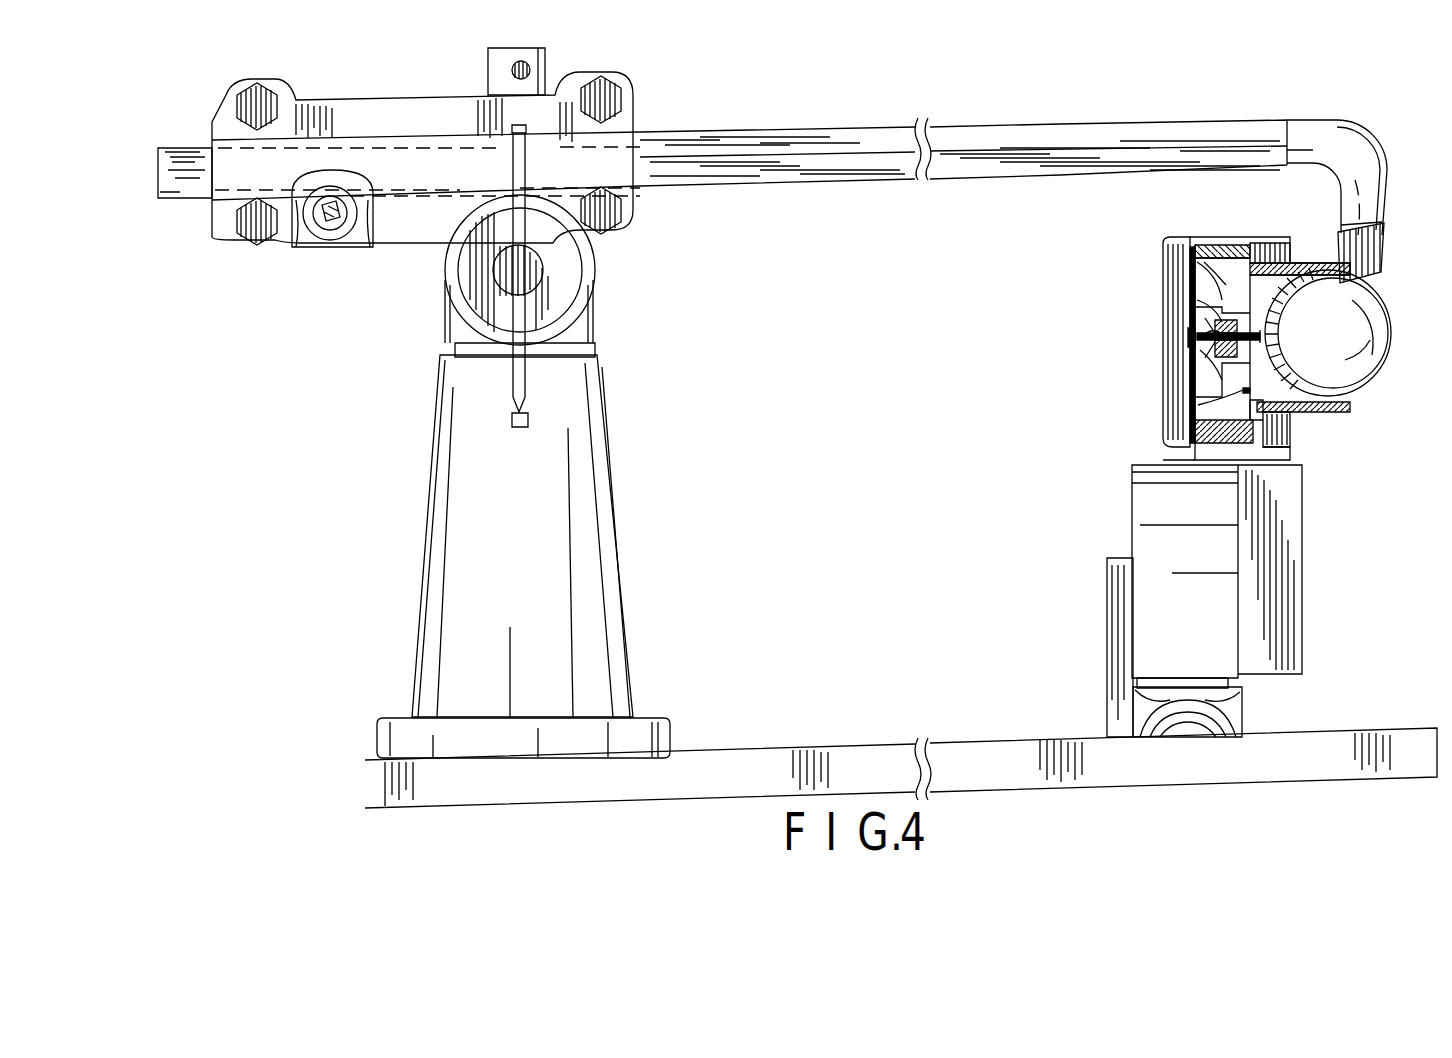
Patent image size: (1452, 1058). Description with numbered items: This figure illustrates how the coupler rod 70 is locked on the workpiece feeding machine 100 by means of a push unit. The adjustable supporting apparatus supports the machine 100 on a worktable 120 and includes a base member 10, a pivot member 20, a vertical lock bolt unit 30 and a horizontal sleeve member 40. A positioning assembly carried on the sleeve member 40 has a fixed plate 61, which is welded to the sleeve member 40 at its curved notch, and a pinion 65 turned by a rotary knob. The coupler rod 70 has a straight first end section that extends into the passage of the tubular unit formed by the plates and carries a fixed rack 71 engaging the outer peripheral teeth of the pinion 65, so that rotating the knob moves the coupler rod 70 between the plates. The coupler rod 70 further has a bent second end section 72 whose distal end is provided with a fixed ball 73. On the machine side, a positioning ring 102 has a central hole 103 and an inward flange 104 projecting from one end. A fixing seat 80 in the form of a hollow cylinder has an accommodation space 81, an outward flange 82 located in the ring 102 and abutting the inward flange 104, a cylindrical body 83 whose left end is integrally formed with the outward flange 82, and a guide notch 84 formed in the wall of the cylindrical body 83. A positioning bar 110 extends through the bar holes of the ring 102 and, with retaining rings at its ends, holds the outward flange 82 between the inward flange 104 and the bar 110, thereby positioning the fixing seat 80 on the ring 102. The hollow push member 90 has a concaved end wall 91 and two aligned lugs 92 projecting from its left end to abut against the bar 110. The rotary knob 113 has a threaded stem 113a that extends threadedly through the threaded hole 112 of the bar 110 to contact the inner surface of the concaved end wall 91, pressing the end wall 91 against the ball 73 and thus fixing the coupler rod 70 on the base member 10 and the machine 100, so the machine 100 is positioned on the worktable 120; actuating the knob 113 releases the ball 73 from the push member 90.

The base member 10 is at (630, 513).
The pivot member 20 is at (612, 334).
The vertical lock bolt unit 30 is at (563, 64).
The horizontal sleeve member 40 is at (590, 292).
The fixed plate 61 is at (375, 110).
The pinion 65 is at (327, 235).
The coupler rod 70 is at (189, 131).
The fixed rack 71 is at (190, 202).
The bent second end section 72 is at (1372, 183).
The fixed ball 73 is at (1380, 325).
The fixing seat 80 is at (1380, 402).
The accommodation space 81 is at (1313, 411).
The outward flange 82 is at (1252, 244).
The cylindrical body 83 is at (1296, 260).
The guide notch 84 is at (1323, 230).
The push member 90 is at (1197, 400).
The concaved end wall 91 is at (1197, 297).
The lugs 92 is at (1240, 388).
The workpiece feeding machine 100 is at (1316, 571).
The positioning ring 102 is at (1210, 243).
The central hole 103 is at (1215, 294).
The inward flange 104 is at (1293, 449).
The positioning bar 110 is at (1191, 321).
The threaded hole 112 is at (1212, 358).
The rotary knob 113 is at (1178, 337).
The threaded stem 113a is at (1217, 303).
The worktable 120 is at (985, 730).